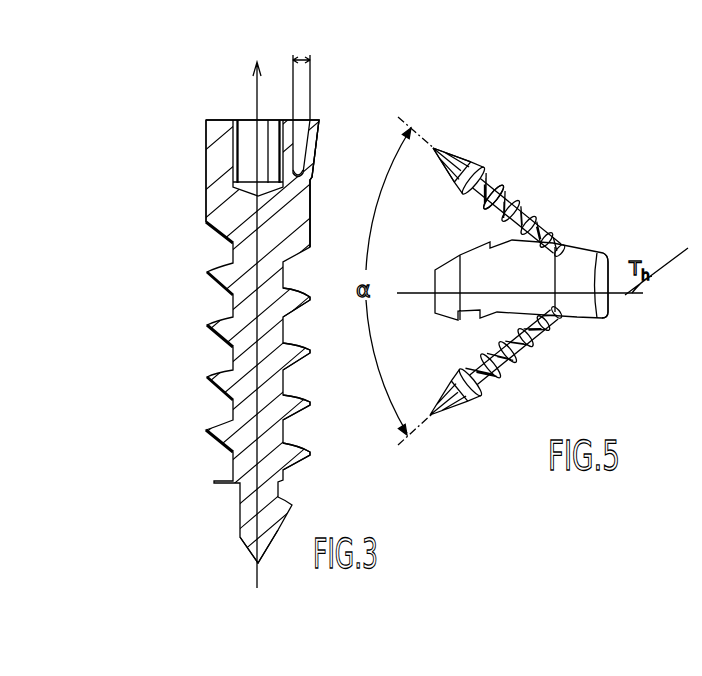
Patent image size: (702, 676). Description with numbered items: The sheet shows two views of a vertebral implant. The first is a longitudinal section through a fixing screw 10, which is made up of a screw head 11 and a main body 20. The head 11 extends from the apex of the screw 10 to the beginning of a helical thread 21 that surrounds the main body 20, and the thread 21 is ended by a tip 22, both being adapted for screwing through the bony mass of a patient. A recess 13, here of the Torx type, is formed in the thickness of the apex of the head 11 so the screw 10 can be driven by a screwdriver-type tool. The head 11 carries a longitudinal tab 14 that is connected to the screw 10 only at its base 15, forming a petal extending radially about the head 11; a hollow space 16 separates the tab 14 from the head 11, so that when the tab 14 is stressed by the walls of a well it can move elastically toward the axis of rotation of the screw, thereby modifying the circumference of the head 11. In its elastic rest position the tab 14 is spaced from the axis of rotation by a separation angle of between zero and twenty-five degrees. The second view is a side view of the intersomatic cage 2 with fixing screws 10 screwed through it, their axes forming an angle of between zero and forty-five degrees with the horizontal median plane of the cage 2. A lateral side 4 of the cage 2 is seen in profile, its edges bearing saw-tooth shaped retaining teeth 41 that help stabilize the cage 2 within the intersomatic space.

In FIG. 3, the fixing screw 10 is at (143, 565).
In FIG. 5, the fixing screw 10 is at (535, 198).
In FIG. 3, the screw head 11 is at (192, 122).
In FIG. 3, the main body 20 is at (192, 565).
In FIG. 3, the recess 13 is at (243, 118).
In FIG. 3, the longitudinal tab 14 is at (313, 137).
In FIG. 3, the base 15 is at (305, 179).
In FIG. 3, the hollow space 16 is at (298, 124).
In FIG. 3, the helical thread 21 is at (310, 349).
In FIG. 5, the helical thread 21 is at (494, 176).
In FIG. 3, the tip 22 is at (258, 565).
In FIG. 5, the tip 22 is at (434, 147).
In FIG. 5, the lateral side 4 is at (532, 277).
In FIG. 5, the intersomatic cage 2 is at (596, 325).
In FIG. 5, the retaining teeth 41 is at (466, 398).